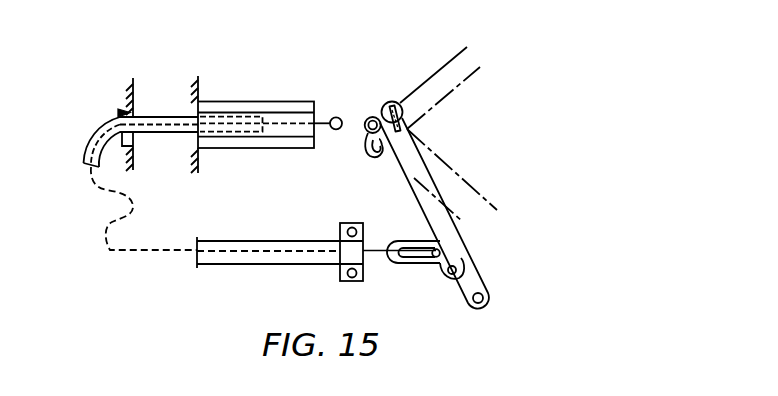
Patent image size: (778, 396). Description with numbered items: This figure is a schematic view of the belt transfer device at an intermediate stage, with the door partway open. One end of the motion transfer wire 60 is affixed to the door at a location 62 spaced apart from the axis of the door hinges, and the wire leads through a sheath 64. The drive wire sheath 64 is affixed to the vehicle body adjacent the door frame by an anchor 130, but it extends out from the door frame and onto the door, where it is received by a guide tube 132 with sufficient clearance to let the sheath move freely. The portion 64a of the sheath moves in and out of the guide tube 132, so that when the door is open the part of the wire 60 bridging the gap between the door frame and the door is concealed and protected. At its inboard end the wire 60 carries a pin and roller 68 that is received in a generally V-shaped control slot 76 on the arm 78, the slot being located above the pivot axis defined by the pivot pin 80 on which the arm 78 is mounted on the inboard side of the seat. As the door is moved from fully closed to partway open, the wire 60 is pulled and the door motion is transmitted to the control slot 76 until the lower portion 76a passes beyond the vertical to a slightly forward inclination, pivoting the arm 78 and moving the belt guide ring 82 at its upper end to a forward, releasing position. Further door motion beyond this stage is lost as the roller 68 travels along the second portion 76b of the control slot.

The motion transfer wire 60 is at (146, 213).
The location 62 is at (341, 117).
The sheath 64 is at (92, 137).
The portion of the sheath 64a is at (162, 116).
The pin and roller 68 is at (440, 251).
The control slot 76 is at (455, 253).
The lower portion of the control slot 76a is at (448, 272).
The second portion of the control slot 76b is at (406, 248).
The arm 78 is at (393, 165).
The pivot pin 80 is at (481, 303).
The belt guide ring 82 is at (395, 102).
The anchor 130 is at (119, 113).
The guide tube 132 is at (297, 80).